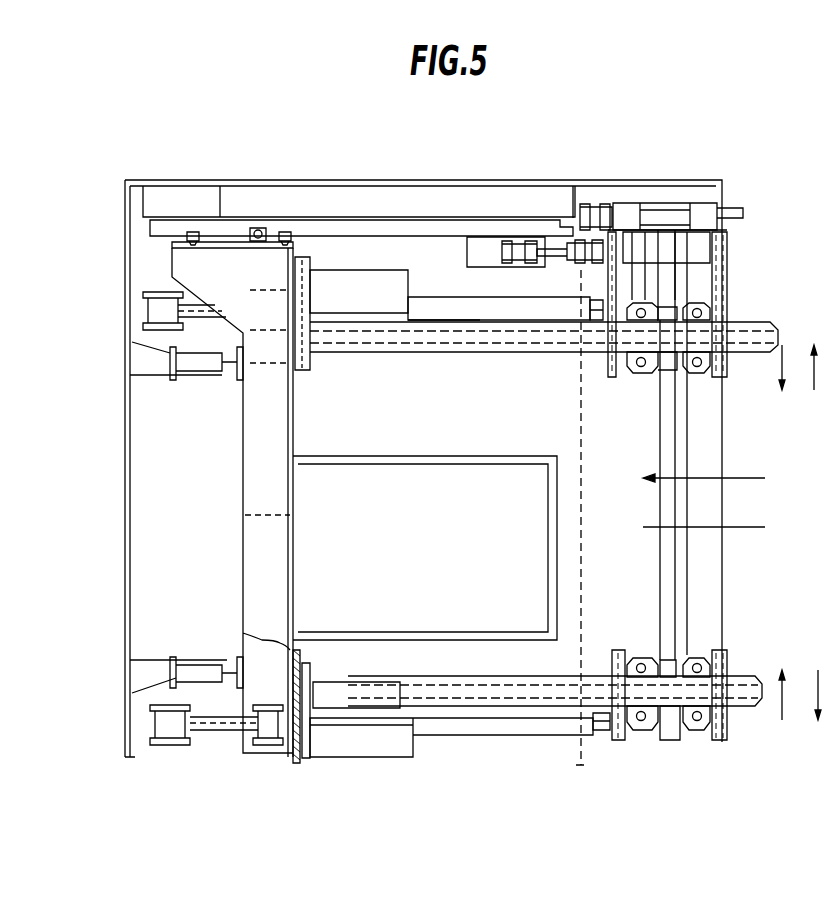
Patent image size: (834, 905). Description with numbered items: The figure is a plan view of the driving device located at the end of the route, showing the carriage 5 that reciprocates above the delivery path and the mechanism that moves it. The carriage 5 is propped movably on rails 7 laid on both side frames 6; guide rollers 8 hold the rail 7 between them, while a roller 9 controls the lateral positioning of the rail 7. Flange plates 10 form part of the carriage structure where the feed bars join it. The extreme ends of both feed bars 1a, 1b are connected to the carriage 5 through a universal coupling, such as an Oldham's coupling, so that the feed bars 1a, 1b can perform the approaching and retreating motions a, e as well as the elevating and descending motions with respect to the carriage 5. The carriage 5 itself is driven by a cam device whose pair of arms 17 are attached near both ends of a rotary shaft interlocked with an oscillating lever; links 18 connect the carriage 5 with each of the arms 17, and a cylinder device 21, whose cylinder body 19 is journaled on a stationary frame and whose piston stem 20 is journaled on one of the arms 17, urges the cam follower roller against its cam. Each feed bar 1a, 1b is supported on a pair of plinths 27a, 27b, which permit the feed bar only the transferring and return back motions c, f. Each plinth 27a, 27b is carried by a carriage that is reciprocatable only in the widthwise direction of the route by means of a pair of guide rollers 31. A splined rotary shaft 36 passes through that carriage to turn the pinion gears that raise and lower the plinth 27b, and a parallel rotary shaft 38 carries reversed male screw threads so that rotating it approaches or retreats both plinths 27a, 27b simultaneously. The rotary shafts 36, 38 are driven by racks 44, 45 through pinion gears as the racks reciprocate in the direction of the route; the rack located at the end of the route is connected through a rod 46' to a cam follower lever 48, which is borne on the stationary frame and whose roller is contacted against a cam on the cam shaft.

The feed bar 1a is at (745, 680).
The feed bar 1b is at (748, 333).
The carriage 5 is at (280, 462).
The side frame 6 is at (418, 190).
The rail 7 is at (440, 232).
The guide rollers 8 is at (193, 232).
The roller 9 is at (258, 228).
The flange plates 10 is at (318, 360).
The arm 17 is at (143, 326).
The link 18 is at (203, 382).
The cylinder body 19 is at (503, 320).
The piston stem 20 is at (372, 313).
The cylinder device 21 is at (458, 320).
The plinth 27a is at (700, 730).
The plinth 27b is at (638, 373).
The guide rollers 31 is at (722, 285).
The rotary shaft 36 is at (683, 620).
The rotary shaft 38 is at (665, 612).
The rack 44 is at (650, 253).
The rack 45 is at (650, 213).
The rod 46' is at (570, 270).
The cam follower lever 48 is at (503, 267).
The approaching and retreating motion a is at (773, 533).
The approaching and retreating motion e is at (808, 533).
The transferring and return back motion c is at (707, 469).
The transferring and return back motion f is at (760, 526).